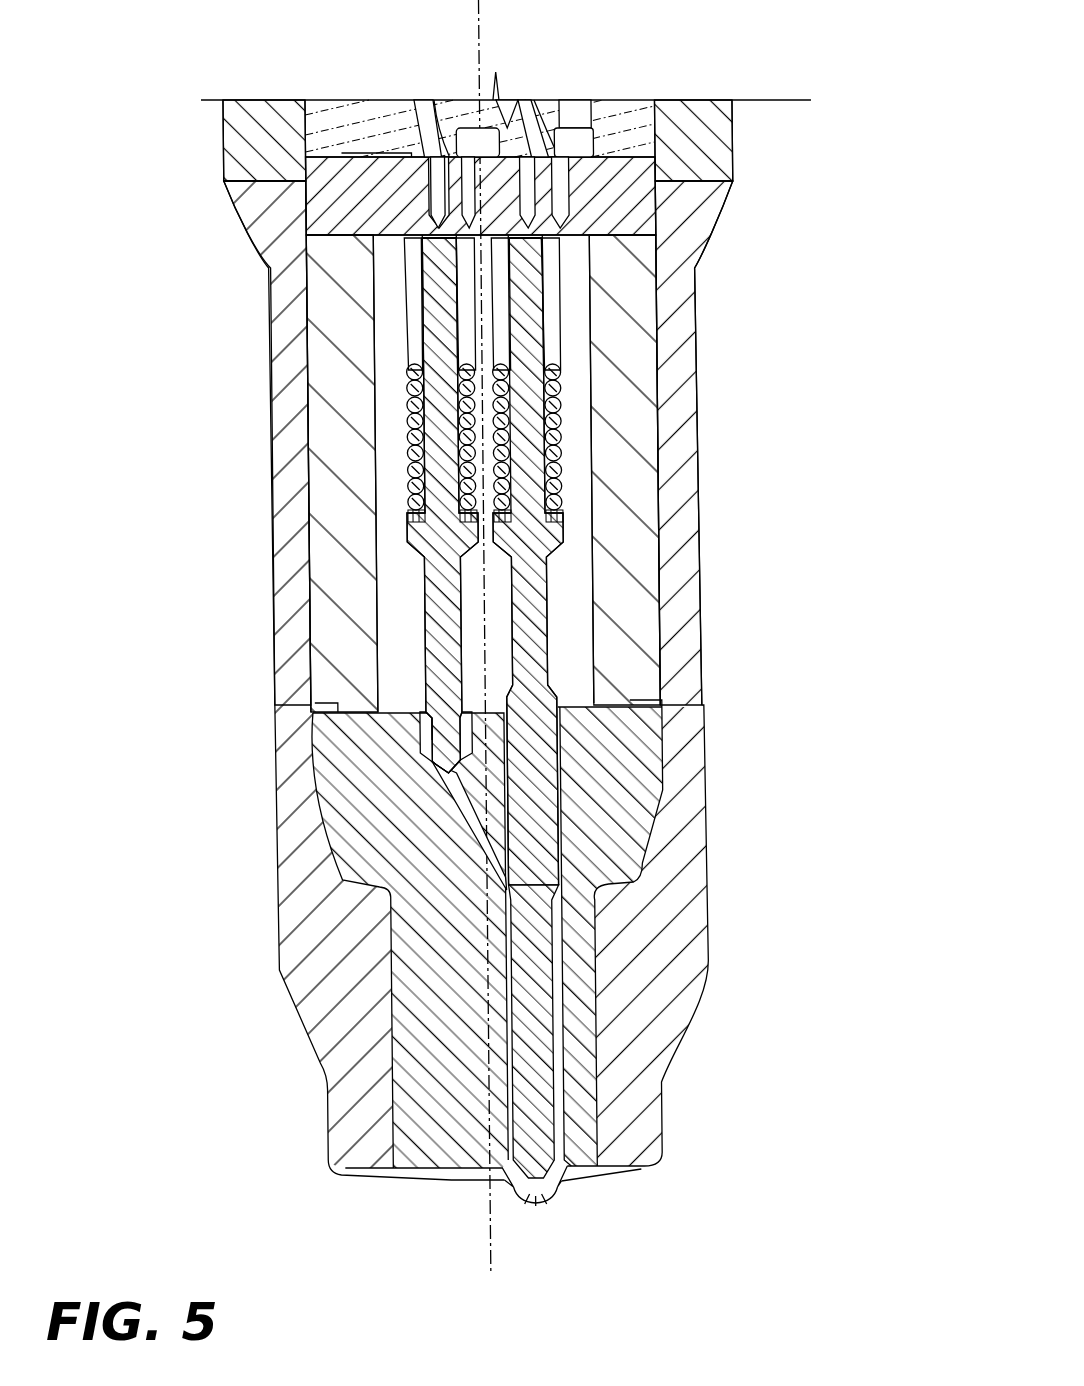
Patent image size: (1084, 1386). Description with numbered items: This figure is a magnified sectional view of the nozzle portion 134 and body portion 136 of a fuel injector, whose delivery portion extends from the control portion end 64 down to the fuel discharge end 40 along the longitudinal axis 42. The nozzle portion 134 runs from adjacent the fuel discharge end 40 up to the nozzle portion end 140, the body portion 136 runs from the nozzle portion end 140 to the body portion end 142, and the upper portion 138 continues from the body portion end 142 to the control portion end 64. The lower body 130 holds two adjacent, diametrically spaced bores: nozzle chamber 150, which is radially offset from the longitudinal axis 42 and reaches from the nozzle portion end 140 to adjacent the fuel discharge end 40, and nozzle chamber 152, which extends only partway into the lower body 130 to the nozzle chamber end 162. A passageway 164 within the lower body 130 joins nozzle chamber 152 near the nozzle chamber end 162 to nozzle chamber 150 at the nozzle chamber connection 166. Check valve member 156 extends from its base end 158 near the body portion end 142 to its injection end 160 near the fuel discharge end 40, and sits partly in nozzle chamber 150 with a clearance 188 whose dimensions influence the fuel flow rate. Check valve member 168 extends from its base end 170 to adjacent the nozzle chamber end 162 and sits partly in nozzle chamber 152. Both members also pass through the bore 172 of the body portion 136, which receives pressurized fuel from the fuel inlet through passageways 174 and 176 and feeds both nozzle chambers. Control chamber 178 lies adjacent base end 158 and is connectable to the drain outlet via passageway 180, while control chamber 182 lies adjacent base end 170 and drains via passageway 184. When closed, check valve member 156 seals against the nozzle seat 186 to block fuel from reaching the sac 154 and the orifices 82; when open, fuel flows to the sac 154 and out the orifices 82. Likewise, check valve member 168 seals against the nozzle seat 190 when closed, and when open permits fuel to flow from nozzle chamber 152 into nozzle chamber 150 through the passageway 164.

The fuel discharge end 40 is at (354, 1226).
The longitudinal axis 42 is at (478, 2).
The control portion end 64 is at (620, 72).
The orifices 82 is at (494, 1242).
The lower body 130 is at (625, 860).
The nozzle portion 134 is at (882, 705).
The body portion 136 is at (882, 228).
The upper portion 138 is at (901, 57).
The nozzle portion end 140 is at (718, 696).
The body portion end 142 is at (720, 247).
The nozzle chamber 150 is at (557, 1032).
The nozzle chamber 152 is at (427, 733).
The sac 154 is at (527, 1200).
The check valve member 156 is at (537, 945).
The base end 158 is at (572, 255).
The injection end 160 is at (553, 1187).
The nozzle chamber end 162 is at (455, 765).
The passageway 164 is at (462, 826).
The nozzle chamber connection 166 is at (486, 918).
The check valve member 168 is at (436, 600).
The base end 170 is at (398, 216).
The bore 172 is at (584, 583).
The passageway 174 is at (560, 182).
The passageway 176 is at (437, 133).
The control chamber 178 is at (560, 232).
The passageway 180 is at (540, 155).
The control chamber 182 is at (413, 239).
The passageway 184 is at (403, 183).
The nozzle seat 186 is at (505, 1194).
The clearance 188 is at (562, 785).
The nozzle seat 190 is at (424, 777).